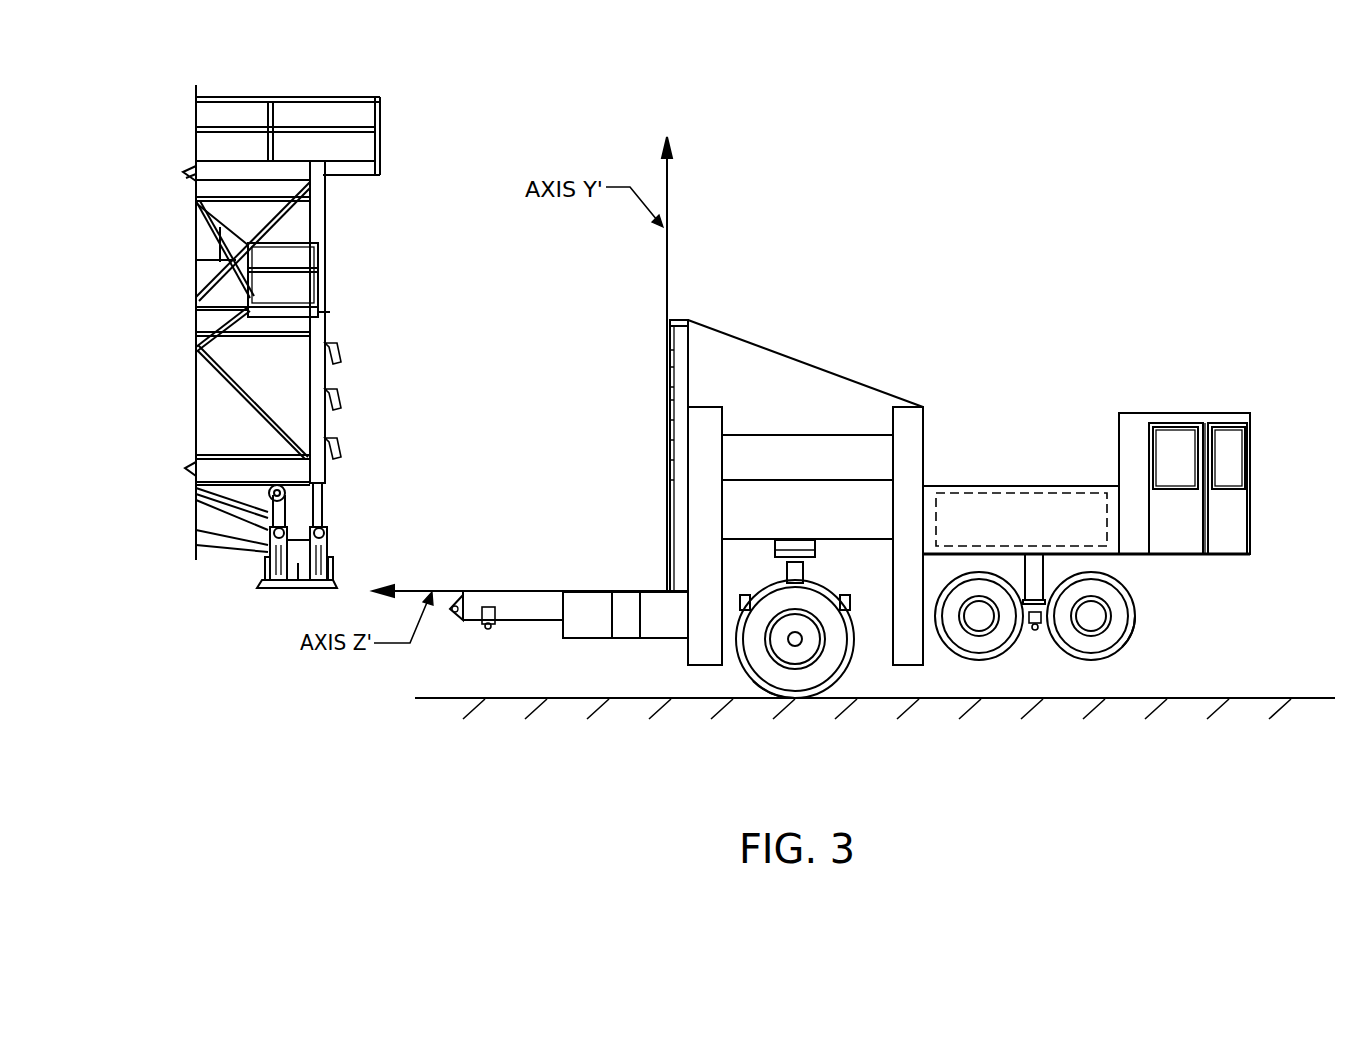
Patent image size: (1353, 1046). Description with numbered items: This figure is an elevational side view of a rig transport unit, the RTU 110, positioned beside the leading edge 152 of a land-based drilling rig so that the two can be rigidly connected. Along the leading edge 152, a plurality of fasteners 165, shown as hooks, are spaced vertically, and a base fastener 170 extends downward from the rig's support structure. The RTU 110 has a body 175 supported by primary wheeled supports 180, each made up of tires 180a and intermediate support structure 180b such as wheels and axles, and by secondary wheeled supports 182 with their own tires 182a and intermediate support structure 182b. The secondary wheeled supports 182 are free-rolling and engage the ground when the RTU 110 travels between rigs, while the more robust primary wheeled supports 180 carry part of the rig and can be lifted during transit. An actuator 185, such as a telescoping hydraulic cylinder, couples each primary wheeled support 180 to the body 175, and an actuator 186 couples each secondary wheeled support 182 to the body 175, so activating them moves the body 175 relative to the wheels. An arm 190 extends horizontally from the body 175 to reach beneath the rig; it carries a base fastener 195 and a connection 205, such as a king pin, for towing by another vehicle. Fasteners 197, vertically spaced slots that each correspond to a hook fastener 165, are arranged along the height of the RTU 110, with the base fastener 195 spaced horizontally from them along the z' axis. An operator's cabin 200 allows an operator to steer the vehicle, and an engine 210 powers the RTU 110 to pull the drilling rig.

The RTU 110 is at (1181, 265).
The leading edge 152 is at (333, 251).
The fasteners 165 is at (340, 355).
The base fastener 170 is at (266, 566).
The body 175 is at (839, 375).
The primary wheeled supports 180 is at (860, 675).
The tires 180a is at (752, 682).
The intermediate support structure 180b is at (681, 318).
The secondary wheeled supports 182 is at (1148, 613).
The tires 182a is at (1128, 649).
The intermediate support structure 182b is at (1035, 632).
The actuator 185 is at (816, 548).
The actuator 186 is at (1044, 569).
The arm 190 is at (583, 591).
The base fastener 195 is at (612, 626).
The fasteners 197 is at (669, 353).
The operator's cabin 200 is at (1252, 468).
The connection 205 is at (488, 631).
The engine 210 is at (993, 491).